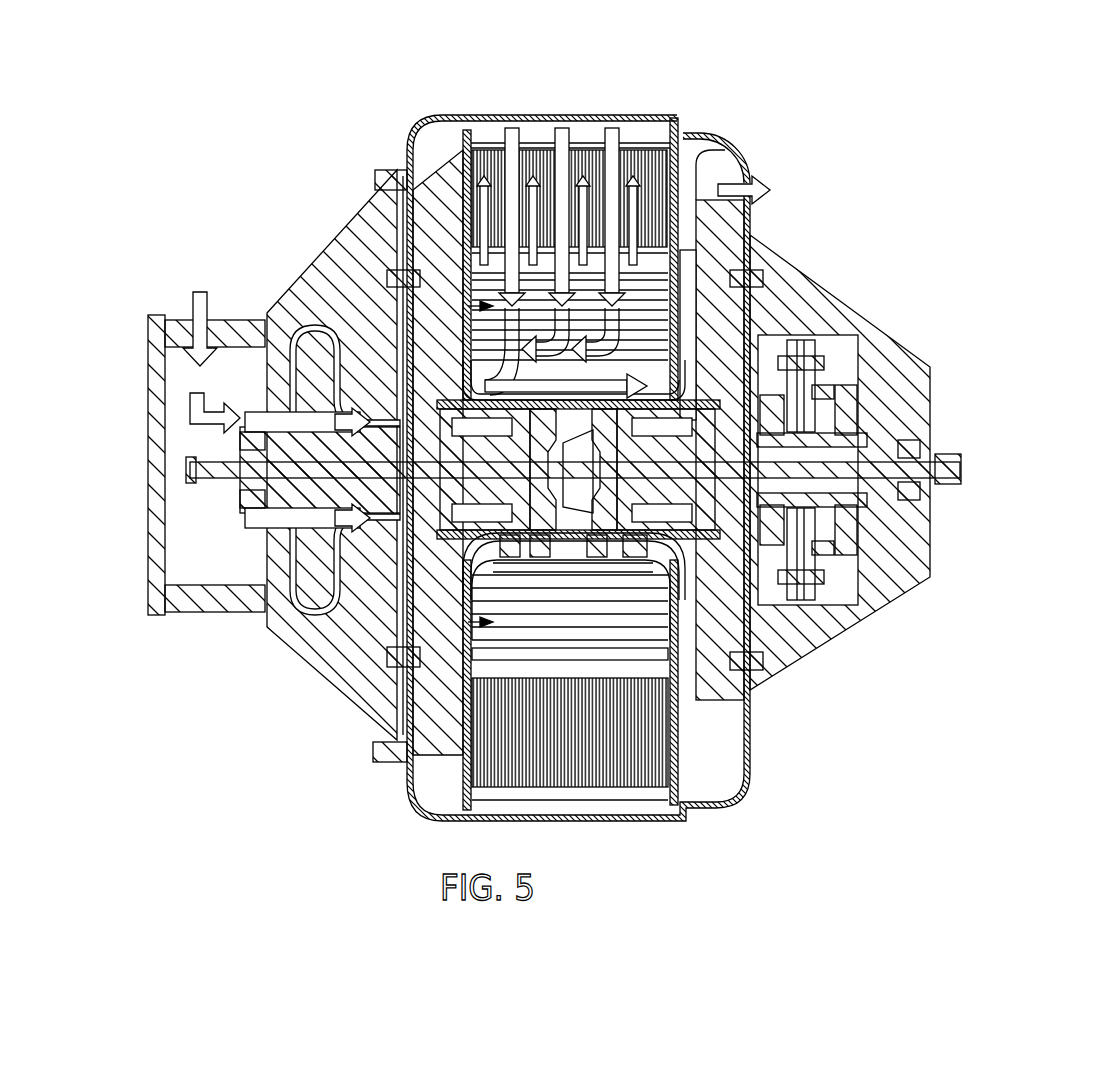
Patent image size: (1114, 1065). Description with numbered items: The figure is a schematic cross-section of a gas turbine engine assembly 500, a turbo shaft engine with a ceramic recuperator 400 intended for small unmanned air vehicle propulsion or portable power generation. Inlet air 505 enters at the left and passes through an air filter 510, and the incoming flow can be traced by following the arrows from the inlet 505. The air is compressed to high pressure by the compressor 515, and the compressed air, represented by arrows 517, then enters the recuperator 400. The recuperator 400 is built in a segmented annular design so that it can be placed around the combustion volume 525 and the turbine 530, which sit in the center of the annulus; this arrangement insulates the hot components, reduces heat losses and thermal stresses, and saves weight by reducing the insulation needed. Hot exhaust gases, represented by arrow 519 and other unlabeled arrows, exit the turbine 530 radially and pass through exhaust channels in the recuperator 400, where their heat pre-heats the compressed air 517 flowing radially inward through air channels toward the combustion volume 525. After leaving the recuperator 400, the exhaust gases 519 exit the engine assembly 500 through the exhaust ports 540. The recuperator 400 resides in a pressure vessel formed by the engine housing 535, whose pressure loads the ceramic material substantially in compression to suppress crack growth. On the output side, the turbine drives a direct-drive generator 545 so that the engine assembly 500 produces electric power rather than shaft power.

The engine assembly 500 is at (752, 100).
The inlet air 505 is at (200, 298).
The air filter 510 is at (152, 462).
The compressor 515 is at (238, 410).
The compressed air 517 is at (480, 118).
The exhaust gases 519 is at (703, 288).
The combustion volume 525 is at (376, 178).
The turbine 530 is at (307, 552).
The engine housing 535 is at (305, 288).
The exhaust ports 540 is at (802, 187).
The direct-drive generator 545 is at (847, 527).
The recuperator 400 is at (628, 835).